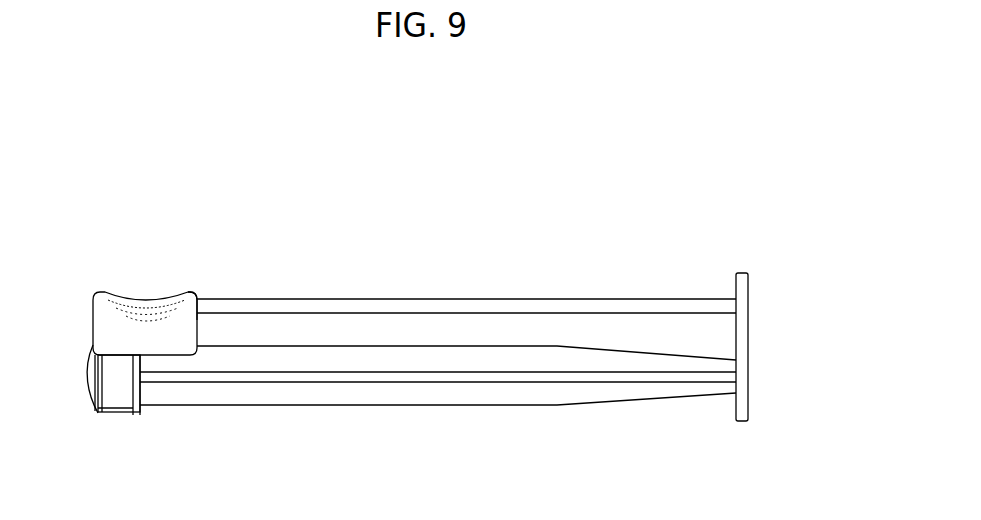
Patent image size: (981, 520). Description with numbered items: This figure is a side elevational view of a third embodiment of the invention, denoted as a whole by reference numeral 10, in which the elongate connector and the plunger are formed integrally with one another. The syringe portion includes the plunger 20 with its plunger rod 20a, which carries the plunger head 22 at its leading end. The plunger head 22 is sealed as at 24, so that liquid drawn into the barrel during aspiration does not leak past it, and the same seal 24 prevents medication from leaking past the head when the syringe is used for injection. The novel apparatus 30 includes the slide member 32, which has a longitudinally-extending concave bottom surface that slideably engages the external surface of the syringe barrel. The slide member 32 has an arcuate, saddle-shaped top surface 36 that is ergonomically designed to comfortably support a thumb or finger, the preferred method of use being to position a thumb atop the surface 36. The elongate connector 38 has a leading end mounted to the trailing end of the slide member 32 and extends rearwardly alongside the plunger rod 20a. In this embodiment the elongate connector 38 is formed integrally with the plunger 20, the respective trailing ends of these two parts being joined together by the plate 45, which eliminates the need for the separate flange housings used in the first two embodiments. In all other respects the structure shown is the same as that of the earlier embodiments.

The exemplary embodiment of the invention 10 is at (552, 183).
The plunger 20 is at (702, 397).
The plunger rod 20a is at (343, 382).
The plunger head 22 is at (117, 370).
The seal 24 is at (98, 413).
The novel apparatus 30 is at (568, 292).
The slide member 32 is at (131, 290).
The saddle-shaped top surface 36 is at (174, 294).
The elongate connector 38 is at (256, 299).
The plate 45 is at (750, 347).